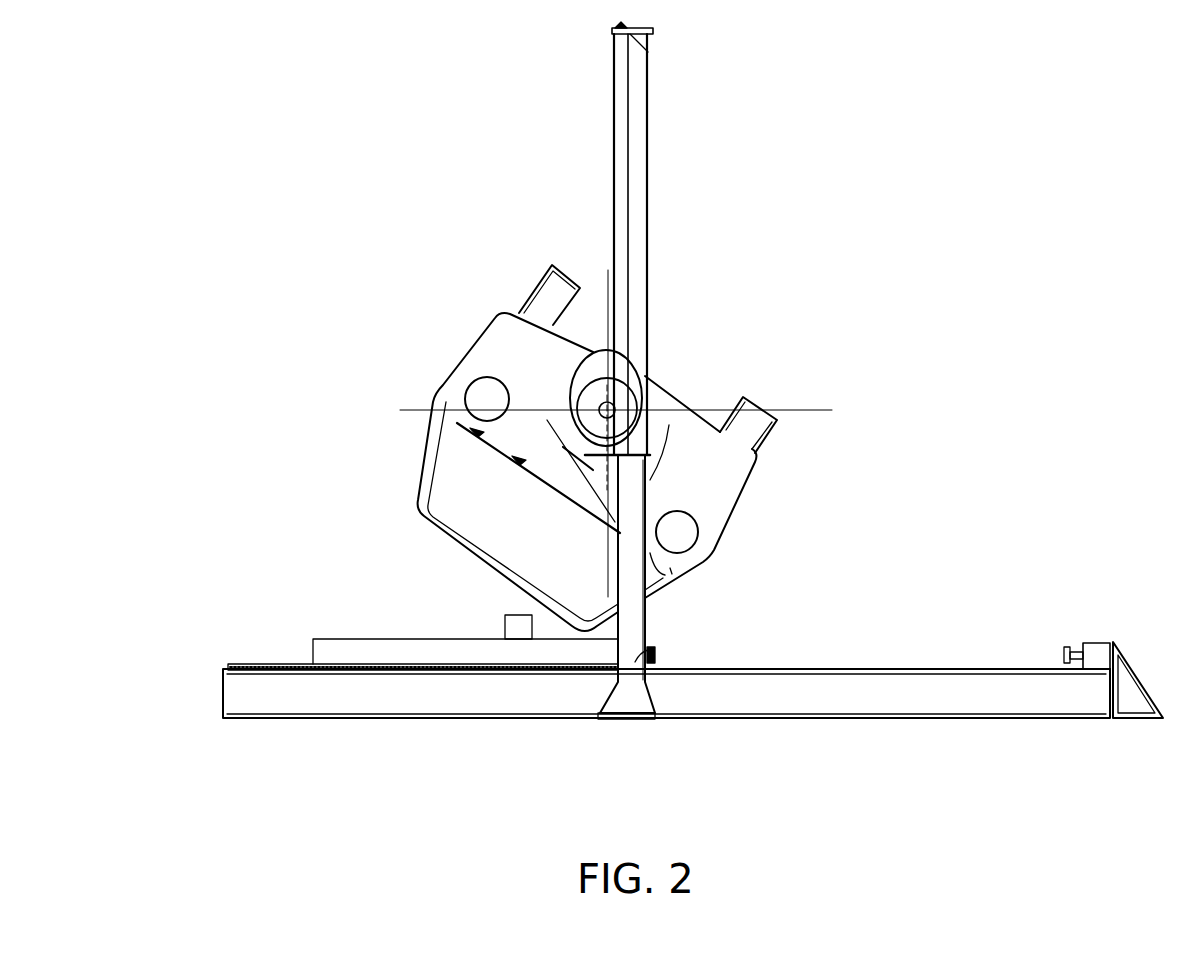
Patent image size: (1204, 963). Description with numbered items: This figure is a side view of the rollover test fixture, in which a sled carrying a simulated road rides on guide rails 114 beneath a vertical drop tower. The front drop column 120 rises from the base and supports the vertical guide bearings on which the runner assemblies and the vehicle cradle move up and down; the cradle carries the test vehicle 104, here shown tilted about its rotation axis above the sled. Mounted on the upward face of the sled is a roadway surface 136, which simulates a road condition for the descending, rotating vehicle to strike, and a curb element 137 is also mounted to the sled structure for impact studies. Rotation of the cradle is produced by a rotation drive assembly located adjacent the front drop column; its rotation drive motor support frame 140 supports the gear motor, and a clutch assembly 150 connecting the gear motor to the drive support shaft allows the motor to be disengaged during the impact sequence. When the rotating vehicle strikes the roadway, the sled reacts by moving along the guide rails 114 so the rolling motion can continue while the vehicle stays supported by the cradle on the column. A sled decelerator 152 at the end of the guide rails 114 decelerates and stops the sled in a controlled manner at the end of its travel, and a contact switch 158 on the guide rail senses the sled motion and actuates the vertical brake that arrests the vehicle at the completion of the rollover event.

The test vehicle 104 is at (740, 478).
The guide rails 114 is at (835, 692).
The front drop column 120 is at (650, 258).
The roadway surface 136 is at (490, 640).
The curb elements 137 is at (500, 612).
The rotation drive motor support frame 140 is at (642, 652).
The clutch assembly 150 is at (619, 372).
The sled decelerator 152 is at (1100, 645).
The contact switch 158 is at (818, 660).